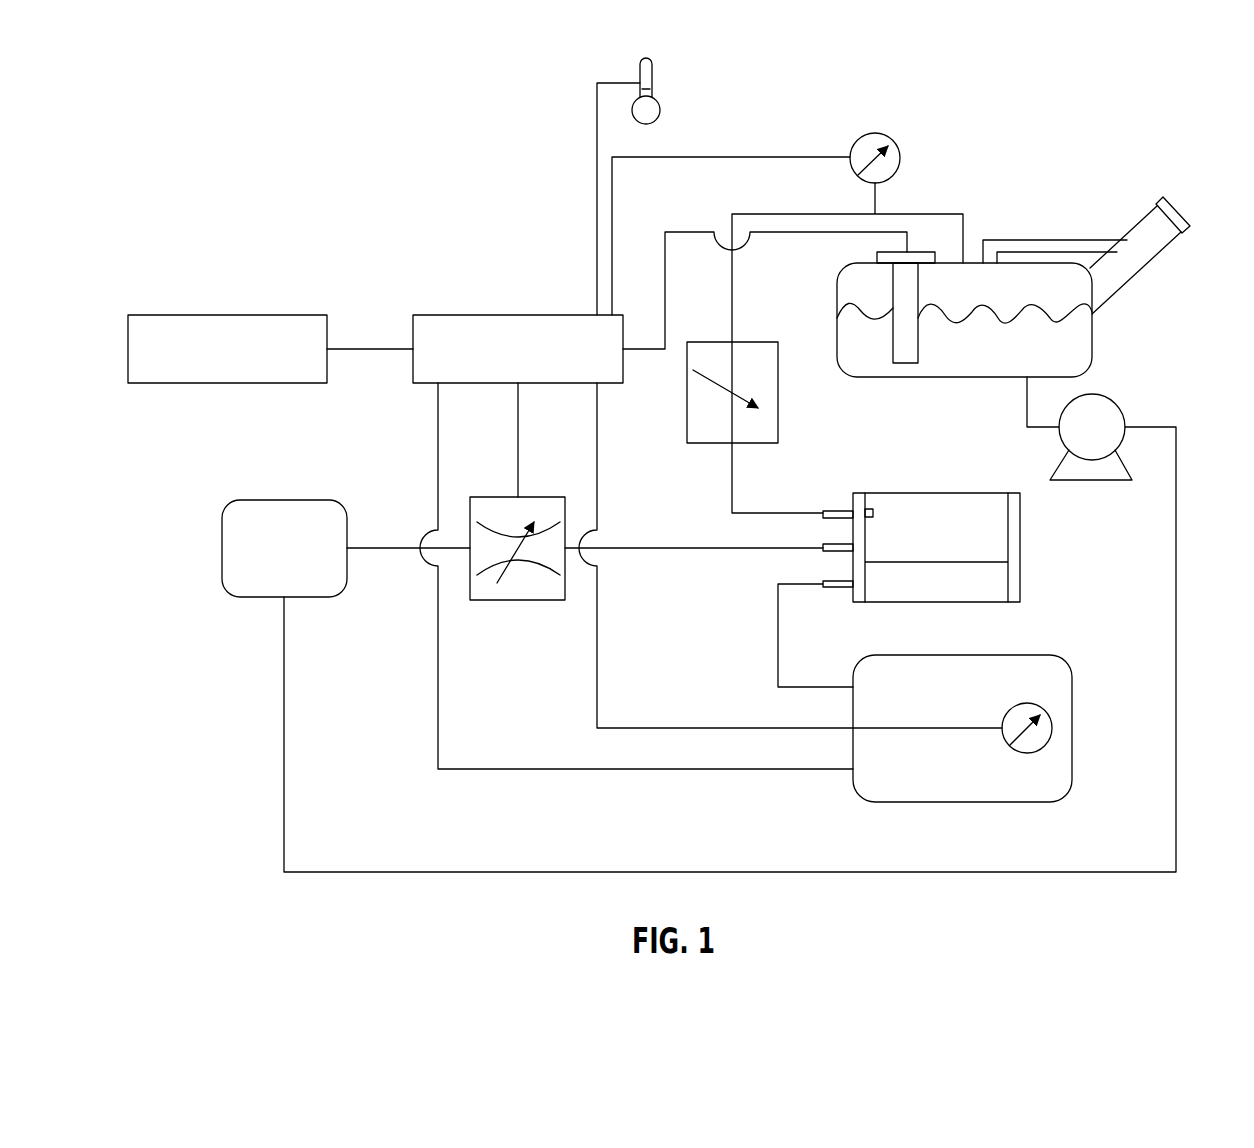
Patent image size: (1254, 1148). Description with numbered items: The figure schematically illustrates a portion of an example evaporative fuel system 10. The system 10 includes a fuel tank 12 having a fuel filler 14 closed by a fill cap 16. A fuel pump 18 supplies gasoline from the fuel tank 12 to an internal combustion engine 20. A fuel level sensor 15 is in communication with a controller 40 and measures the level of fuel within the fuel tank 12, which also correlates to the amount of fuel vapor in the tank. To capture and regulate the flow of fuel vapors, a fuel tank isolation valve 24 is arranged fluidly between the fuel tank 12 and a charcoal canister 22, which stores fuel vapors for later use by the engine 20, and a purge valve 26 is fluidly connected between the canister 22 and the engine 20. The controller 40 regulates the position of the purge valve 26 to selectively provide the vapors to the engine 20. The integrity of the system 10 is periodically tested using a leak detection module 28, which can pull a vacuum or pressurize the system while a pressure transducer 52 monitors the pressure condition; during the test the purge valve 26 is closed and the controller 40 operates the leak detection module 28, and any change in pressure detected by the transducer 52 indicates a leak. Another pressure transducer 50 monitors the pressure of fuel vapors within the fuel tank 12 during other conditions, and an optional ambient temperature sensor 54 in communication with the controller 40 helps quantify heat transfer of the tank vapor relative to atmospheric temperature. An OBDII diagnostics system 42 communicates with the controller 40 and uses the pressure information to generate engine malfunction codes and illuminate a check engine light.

The evaporative fuel system 10 is at (572, 239).
The fuel tank 12 is at (997, 364).
The fuel filler 14 is at (1130, 263).
The fuel level sensor 15 is at (907, 364).
The fill cap 16 is at (1188, 211).
The fuel pump 18 is at (1115, 404).
The internal combustion engine 20 is at (298, 566).
The charcoal canister 22 is at (950, 548).
The fuel tank isolation valve 24 is at (706, 443).
The purge valve 26 is at (528, 600).
The leak detection module 28 is at (933, 779).
The controller 40 is at (470, 313).
The OBDII diagnostics system 42 is at (185, 313).
The pressure transducer 50 is at (895, 150).
The pressure transducer 52 is at (1052, 728).
The ambient temperature sensor 54 is at (653, 75).